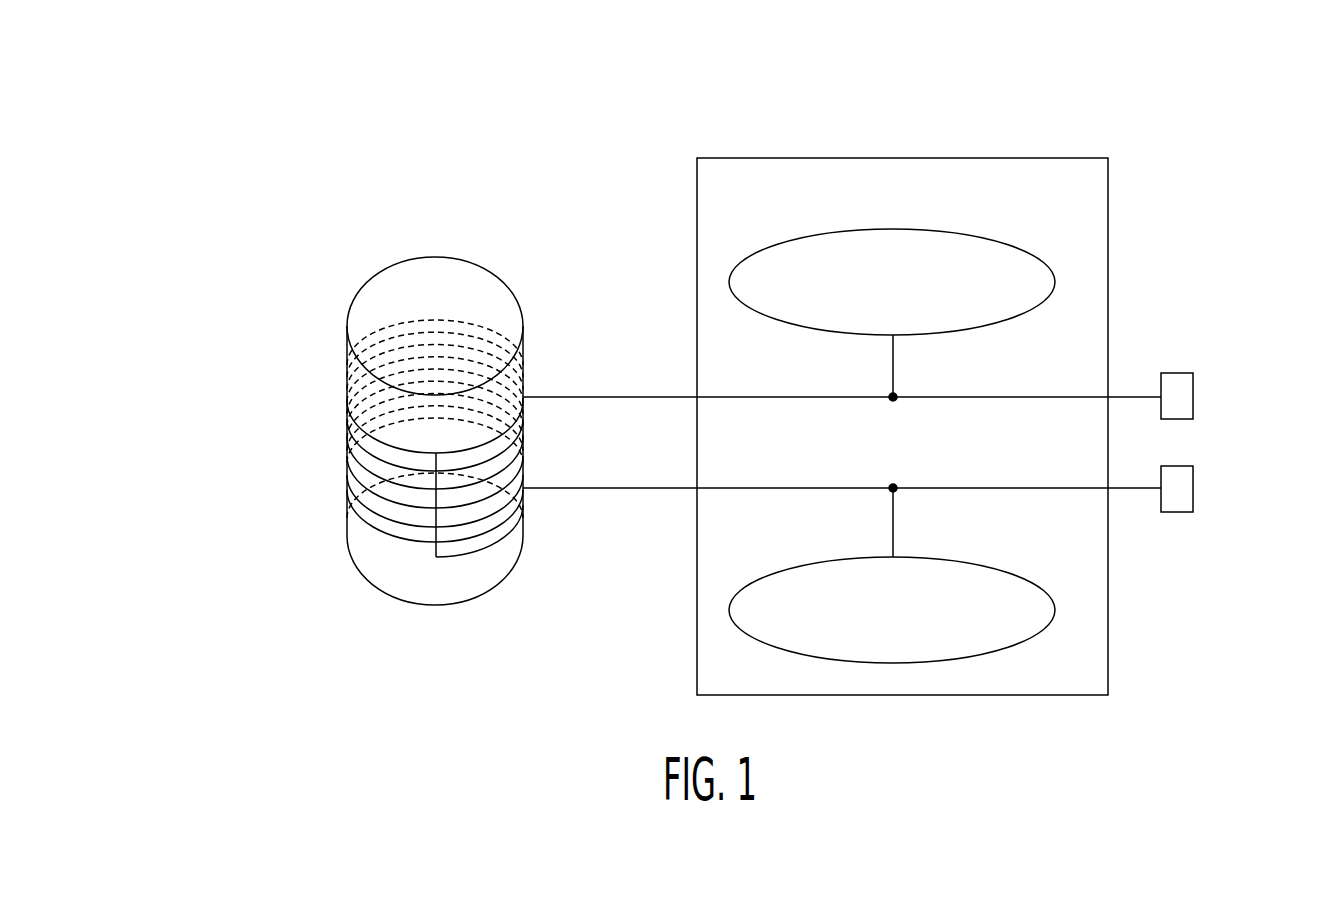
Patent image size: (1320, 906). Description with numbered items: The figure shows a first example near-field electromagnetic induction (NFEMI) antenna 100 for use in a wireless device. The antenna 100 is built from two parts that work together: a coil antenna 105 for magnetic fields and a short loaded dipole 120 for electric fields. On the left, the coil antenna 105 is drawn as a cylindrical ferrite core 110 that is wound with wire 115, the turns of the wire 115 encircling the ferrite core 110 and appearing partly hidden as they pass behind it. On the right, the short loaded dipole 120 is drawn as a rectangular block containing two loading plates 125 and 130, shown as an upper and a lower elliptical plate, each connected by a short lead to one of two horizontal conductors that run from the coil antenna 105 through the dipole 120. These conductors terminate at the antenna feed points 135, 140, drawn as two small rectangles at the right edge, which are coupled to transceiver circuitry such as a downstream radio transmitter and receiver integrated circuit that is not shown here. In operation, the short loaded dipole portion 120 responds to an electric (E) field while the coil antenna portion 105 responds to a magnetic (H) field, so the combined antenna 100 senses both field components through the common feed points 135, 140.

The near-field electromagnetic induction antenna 100 is at (168, 100).
The coil antenna 105 is at (304, 196).
The ferrite core 110 is at (372, 284).
The wire 115 is at (347, 452).
The short loaded dipole 120 is at (768, 158).
The loading plate 125 is at (1055, 282).
The loading plate 130 is at (1055, 608).
The feed point 135 is at (1193, 385).
The feed point 140 is at (1193, 502).